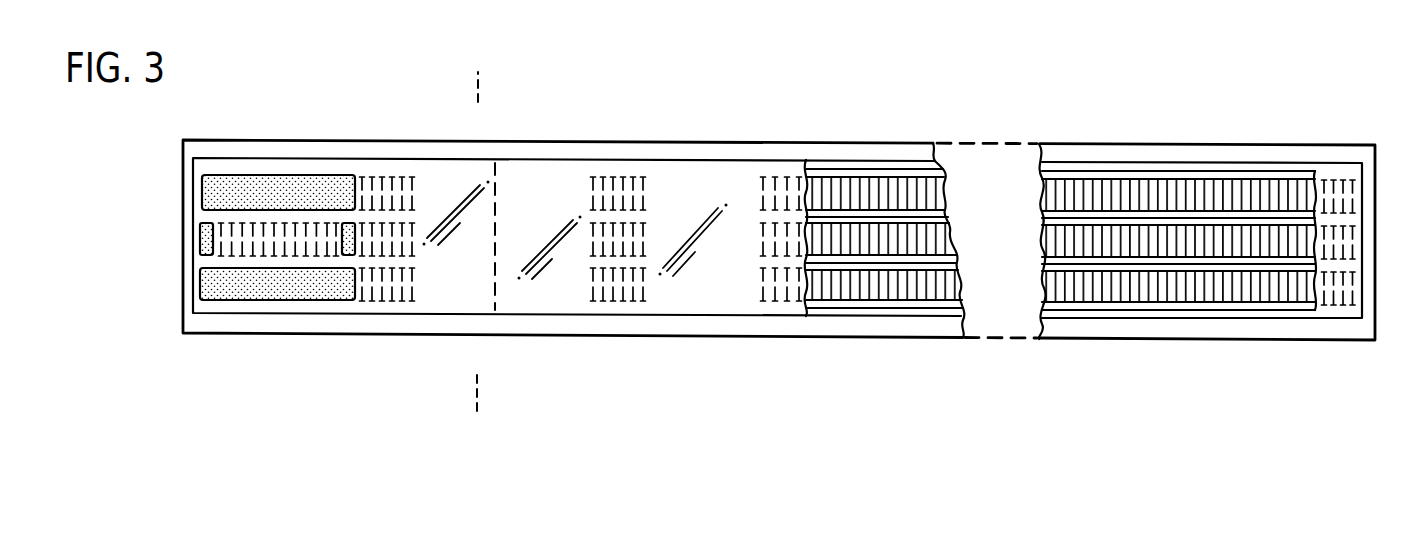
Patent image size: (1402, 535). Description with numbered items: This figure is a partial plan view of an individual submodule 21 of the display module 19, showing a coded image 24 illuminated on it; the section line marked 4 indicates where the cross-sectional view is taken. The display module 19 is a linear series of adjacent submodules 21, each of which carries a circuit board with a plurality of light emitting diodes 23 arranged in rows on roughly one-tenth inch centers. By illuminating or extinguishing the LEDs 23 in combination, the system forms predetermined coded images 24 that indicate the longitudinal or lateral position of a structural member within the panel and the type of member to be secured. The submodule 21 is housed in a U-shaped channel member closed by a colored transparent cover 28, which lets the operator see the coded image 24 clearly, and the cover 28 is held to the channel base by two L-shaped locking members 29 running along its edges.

The display module 19 is at (170, 235).
The submodule 21 is at (447, 288).
The light emitting diodes 23 is at (620, 290).
The coded image 24 is at (318, 192).
The cover 28 is at (737, 296).
The L-shaped locking members 29 is at (918, 150).
The section line 4- 4 is at (516, 412).